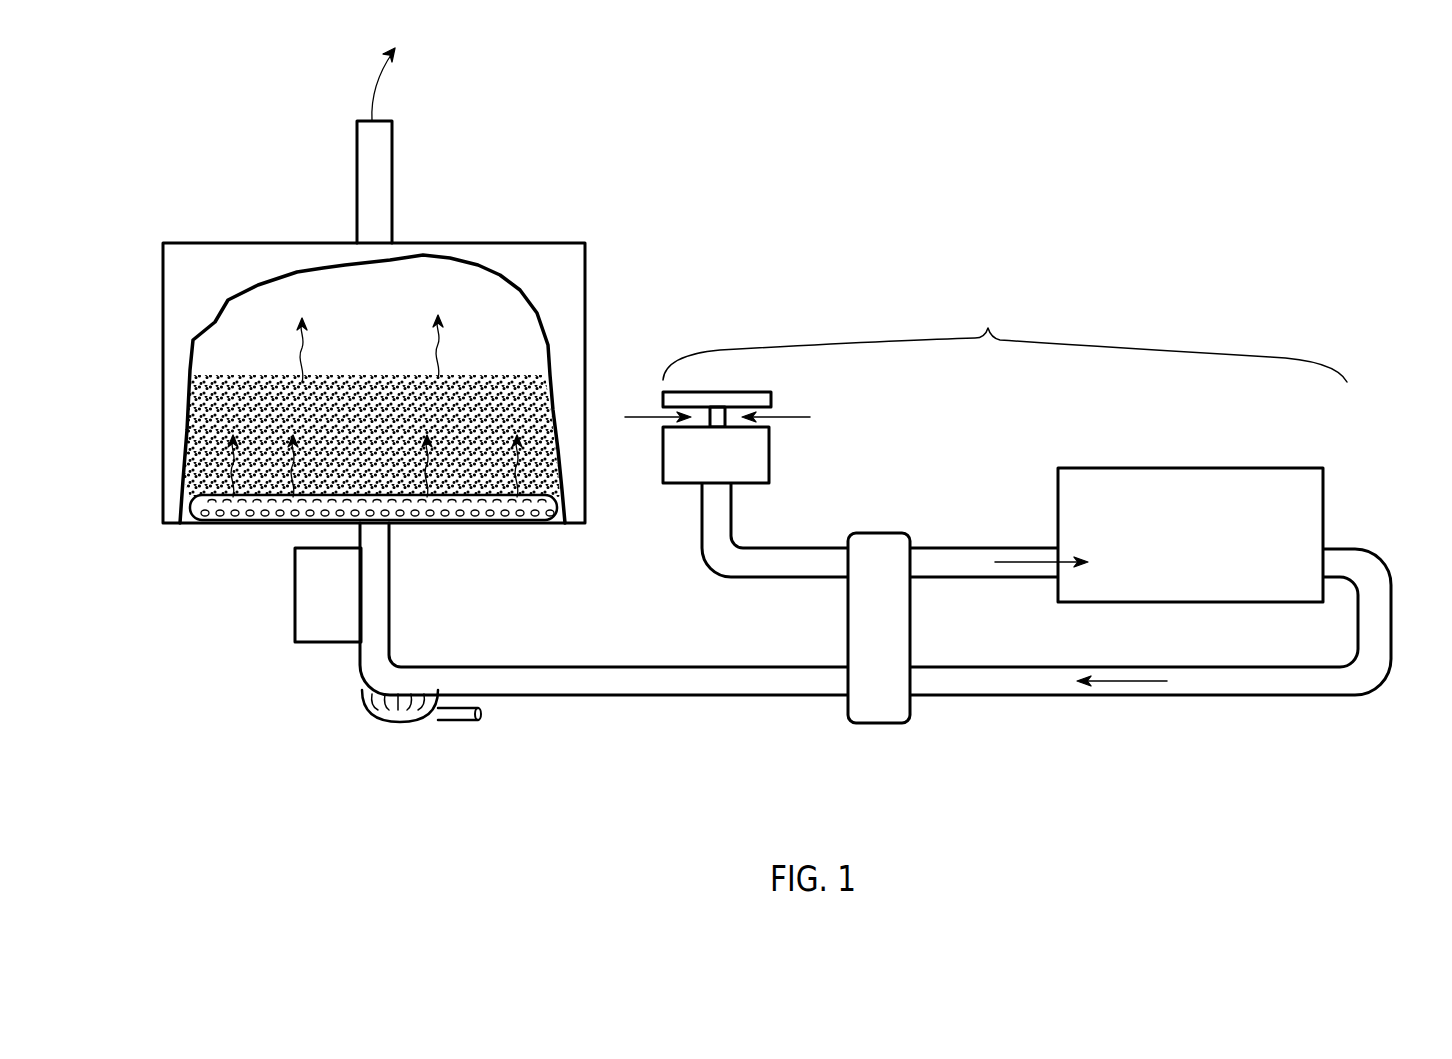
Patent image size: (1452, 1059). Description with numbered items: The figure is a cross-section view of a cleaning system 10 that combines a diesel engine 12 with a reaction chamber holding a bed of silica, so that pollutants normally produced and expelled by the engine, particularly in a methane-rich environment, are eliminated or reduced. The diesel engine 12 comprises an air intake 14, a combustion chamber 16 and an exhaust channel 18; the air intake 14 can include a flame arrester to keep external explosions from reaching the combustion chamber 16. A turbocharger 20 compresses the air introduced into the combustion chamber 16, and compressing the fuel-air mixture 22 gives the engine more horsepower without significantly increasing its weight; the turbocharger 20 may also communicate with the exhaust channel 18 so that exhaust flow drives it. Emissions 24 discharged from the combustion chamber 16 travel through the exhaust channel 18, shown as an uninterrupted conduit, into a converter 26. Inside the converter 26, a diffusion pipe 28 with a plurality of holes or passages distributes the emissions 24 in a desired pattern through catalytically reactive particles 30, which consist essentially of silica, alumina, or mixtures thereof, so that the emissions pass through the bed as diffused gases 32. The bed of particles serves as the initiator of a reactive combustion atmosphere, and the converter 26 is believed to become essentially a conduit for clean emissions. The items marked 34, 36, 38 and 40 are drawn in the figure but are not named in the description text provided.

The cleaning system 10 is at (802, 173).
The diesel engine 12 is at (1005, 338).
The air intake 14 is at (693, 470).
The combustion chamber 16 is at (1253, 477).
The exhaust channel 18 is at (1388, 628).
The turbocharger 20 is at (905, 634).
The fuel-air mixture 22 is at (1012, 556).
The emissions 24 is at (1105, 683).
The converter 26 is at (175, 268).
The diffusion pipe 28 is at (467, 522).
The catalytically reactive particles 30 is at (360, 453).
The diffused gases 32 is at (300, 472).
The vapor 34 is at (377, 86).
The vent stack 36 is at (370, 160).
The burner 38 is at (360, 710).
The control box 40 is at (295, 612).